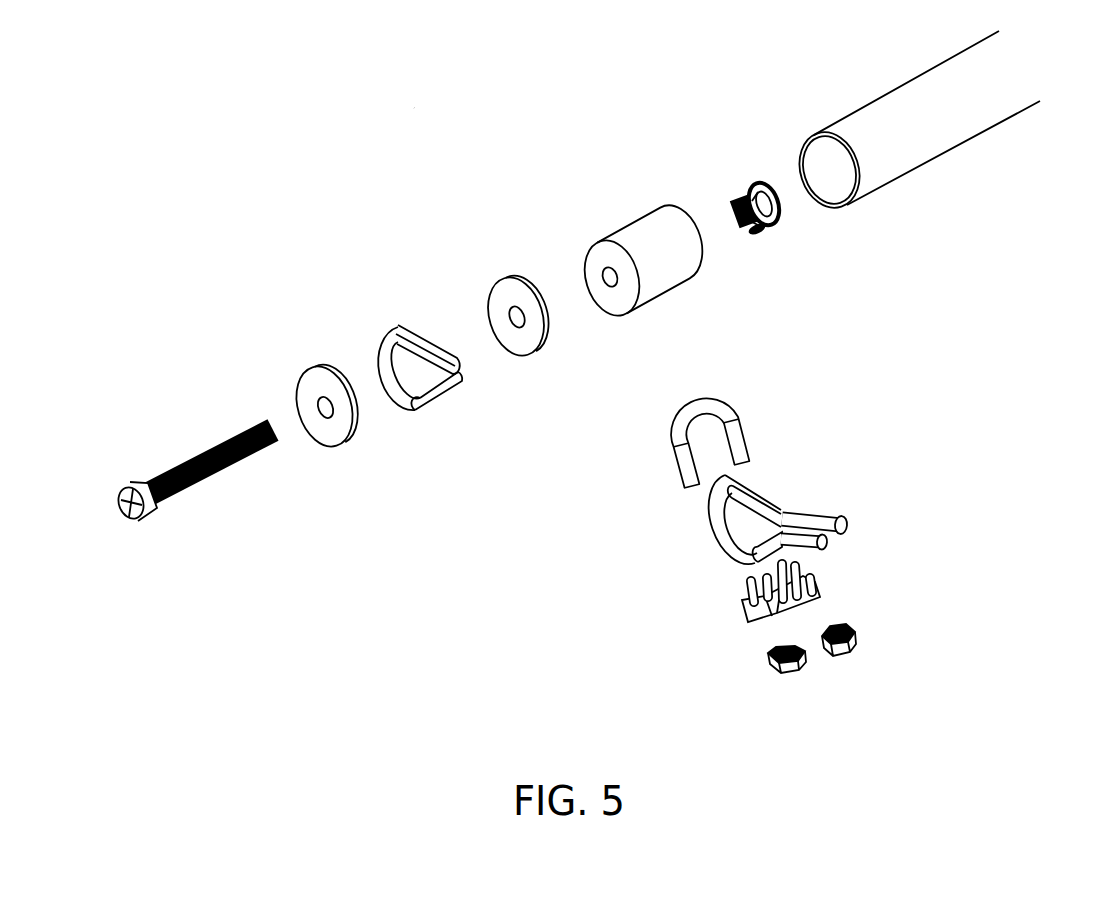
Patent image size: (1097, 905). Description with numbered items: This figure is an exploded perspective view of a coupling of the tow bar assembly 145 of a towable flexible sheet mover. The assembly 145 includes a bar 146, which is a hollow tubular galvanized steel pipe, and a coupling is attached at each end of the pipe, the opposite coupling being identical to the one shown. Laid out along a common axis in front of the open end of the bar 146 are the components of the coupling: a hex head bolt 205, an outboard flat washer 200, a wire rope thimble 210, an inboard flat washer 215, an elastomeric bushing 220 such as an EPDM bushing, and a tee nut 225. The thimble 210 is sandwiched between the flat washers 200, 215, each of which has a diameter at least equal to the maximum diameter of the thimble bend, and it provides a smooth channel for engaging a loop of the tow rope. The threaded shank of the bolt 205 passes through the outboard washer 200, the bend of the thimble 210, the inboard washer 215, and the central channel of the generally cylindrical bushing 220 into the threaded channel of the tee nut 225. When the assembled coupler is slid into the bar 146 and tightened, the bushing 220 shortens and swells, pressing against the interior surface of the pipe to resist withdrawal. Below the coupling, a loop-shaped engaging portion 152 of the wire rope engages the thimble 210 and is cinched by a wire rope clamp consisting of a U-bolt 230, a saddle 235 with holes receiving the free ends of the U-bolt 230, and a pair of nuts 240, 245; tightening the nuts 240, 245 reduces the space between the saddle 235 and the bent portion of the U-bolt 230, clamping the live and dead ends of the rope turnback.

The tow bar assembly 145 is at (414, 108).
The bar 146 is at (884, 104).
The engaging portion of the wire rope 152 is at (762, 498).
The outboard flat washer 200 is at (305, 388).
The bolt 205 is at (124, 490).
The wire rope thimble 210 is at (380, 365).
The inboard flat washer 215 is at (496, 298).
The elastomeric bushing 220 is at (640, 232).
The tee nut 225 is at (742, 192).
The U-bolt 230 is at (707, 400).
The saddle 235 is at (800, 612).
The nut 240 is at (850, 652).
The nut 245 is at (792, 672).